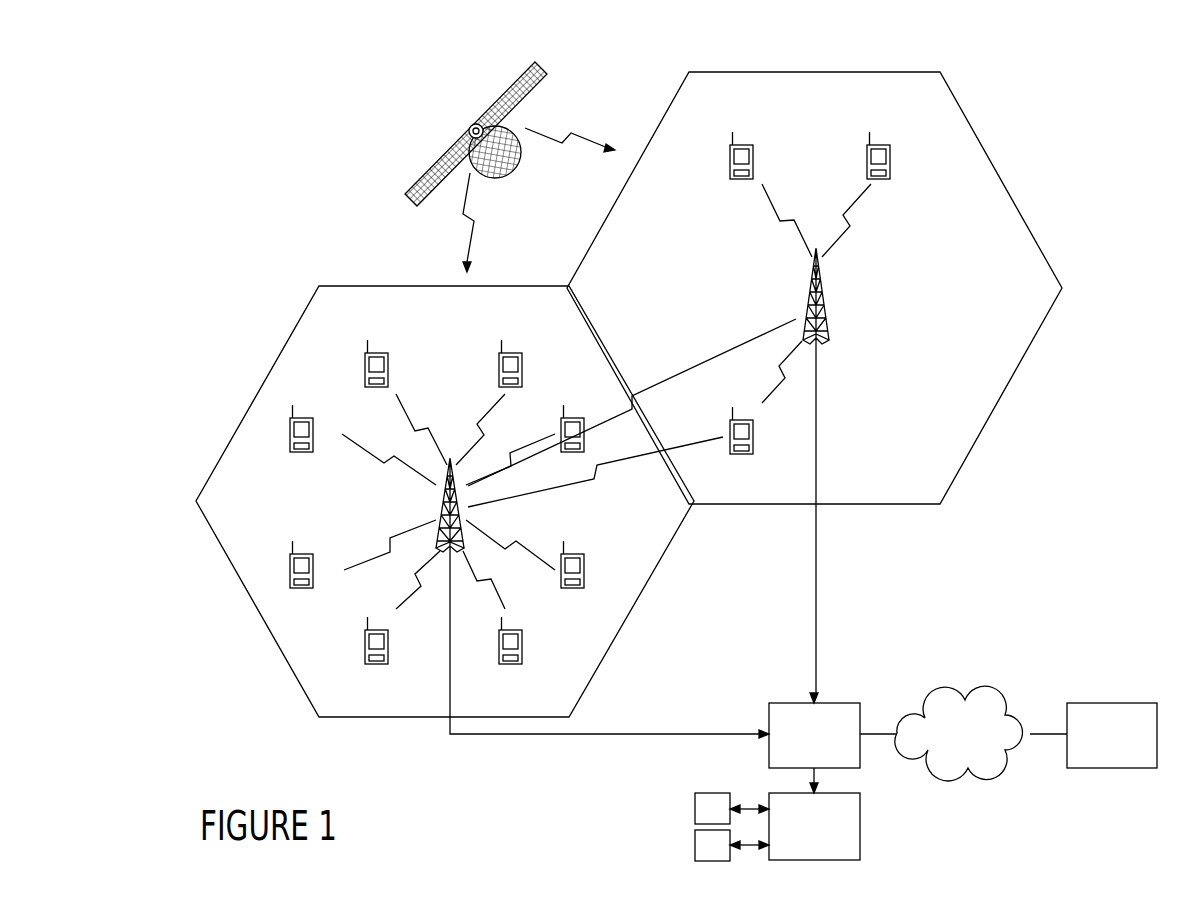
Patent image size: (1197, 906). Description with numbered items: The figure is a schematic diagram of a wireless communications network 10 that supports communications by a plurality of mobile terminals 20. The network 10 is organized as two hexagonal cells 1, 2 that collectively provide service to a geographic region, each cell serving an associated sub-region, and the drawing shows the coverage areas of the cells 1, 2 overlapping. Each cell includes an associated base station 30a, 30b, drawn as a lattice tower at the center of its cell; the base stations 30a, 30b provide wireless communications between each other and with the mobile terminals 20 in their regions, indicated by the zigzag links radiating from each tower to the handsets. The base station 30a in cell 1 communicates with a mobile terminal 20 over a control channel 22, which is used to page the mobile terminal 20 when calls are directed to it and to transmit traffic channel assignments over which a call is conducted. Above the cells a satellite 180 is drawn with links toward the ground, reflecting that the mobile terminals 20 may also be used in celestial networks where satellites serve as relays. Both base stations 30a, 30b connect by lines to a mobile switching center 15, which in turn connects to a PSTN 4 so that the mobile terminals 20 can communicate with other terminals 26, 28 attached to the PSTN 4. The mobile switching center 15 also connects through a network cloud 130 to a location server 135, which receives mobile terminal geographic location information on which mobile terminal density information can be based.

The wireless communications network 10 is at (1163, 135).
The cell 1 is at (1007, 382).
The cell 2 is at (297, 680).
The satellite 180 is at (478, 122).
The base station 30a is at (806, 303).
The base station 30b is at (440, 511).
The mobile terminal 20 is at (390, 365).
The control channel 22 is at (776, 212).
The mobile switching center 15 is at (803, 760).
The network 130 is at (949, 745).
The location server 135 is at (1096, 745).
The PSTN 4 is at (806, 850).
The terminal 28 is at (724, 819).
The terminal 26 is at (724, 856).